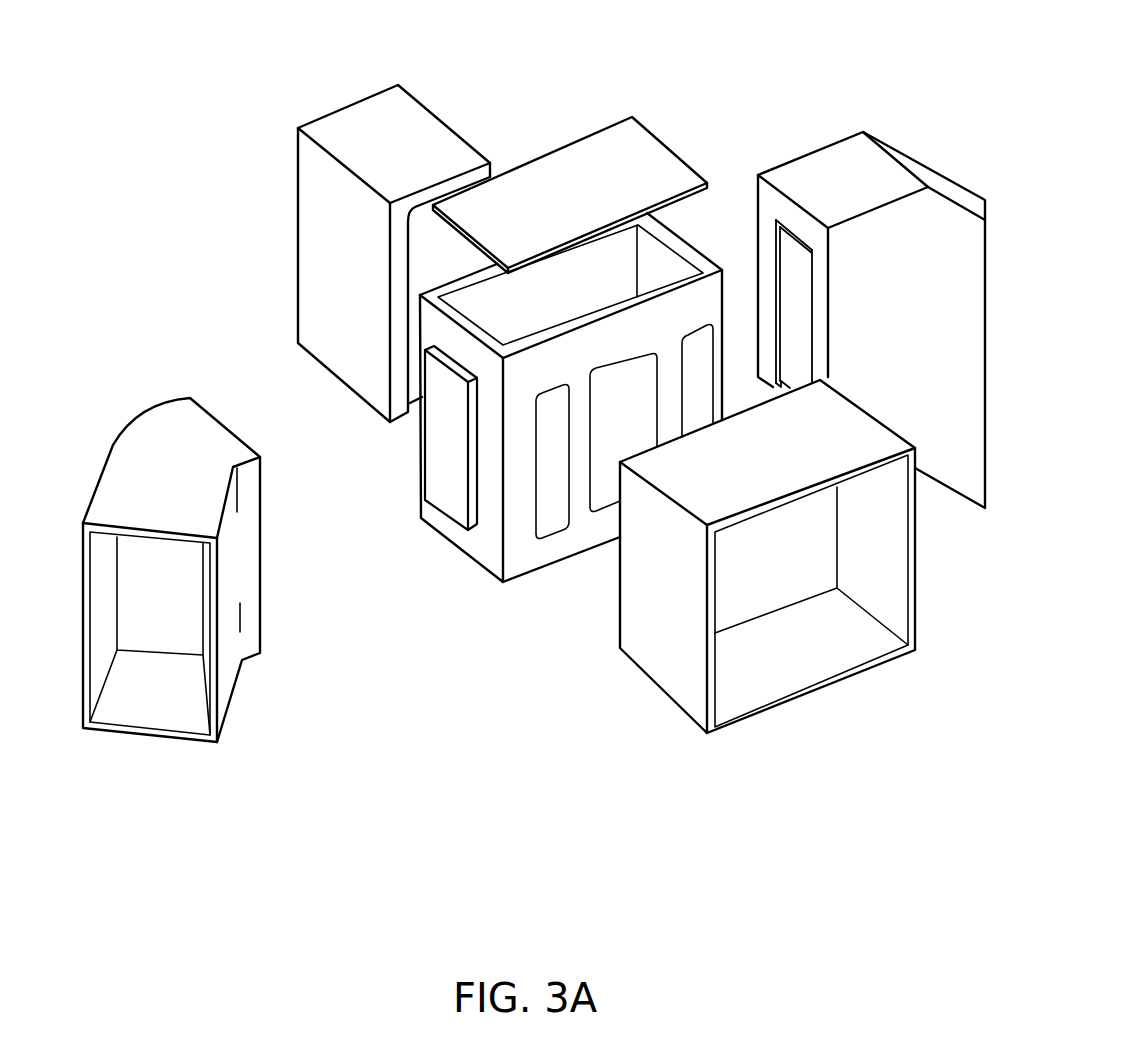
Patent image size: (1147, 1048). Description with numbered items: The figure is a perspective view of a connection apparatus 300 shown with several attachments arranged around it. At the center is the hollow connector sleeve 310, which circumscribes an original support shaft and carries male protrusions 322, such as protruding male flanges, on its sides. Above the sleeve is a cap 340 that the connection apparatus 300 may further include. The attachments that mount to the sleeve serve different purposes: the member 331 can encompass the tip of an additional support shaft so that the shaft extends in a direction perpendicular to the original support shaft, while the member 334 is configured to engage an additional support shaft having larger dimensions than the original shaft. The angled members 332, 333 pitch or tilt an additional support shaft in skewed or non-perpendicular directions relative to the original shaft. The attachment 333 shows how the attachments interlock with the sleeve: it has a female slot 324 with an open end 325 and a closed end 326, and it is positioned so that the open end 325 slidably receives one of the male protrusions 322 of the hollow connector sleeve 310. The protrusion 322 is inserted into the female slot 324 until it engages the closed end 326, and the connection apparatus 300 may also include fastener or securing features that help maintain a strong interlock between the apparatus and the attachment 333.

The connection apparatus 300 is at (459, 625).
The hollow connector sleeve 310 is at (525, 565).
The male protrusion 322 is at (436, 484).
The female slot 324 is at (792, 275).
The open end 325 is at (773, 383).
The closed end 326 is at (792, 236).
The member 331 is at (323, 237).
The angled member 332 is at (163, 443).
The angled member 333 is at (863, 175).
The member 334 is at (673, 633).
The cap 340 is at (628, 160).